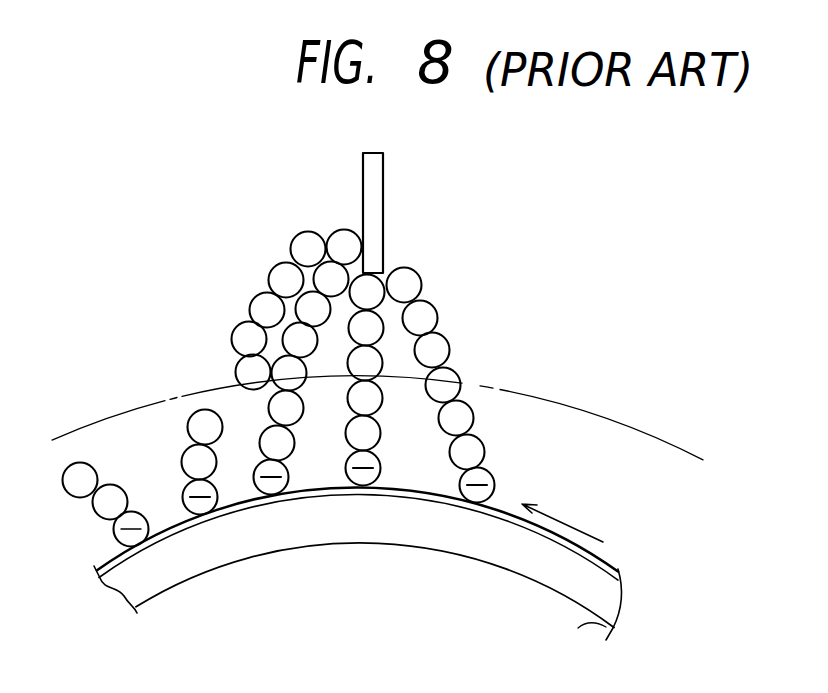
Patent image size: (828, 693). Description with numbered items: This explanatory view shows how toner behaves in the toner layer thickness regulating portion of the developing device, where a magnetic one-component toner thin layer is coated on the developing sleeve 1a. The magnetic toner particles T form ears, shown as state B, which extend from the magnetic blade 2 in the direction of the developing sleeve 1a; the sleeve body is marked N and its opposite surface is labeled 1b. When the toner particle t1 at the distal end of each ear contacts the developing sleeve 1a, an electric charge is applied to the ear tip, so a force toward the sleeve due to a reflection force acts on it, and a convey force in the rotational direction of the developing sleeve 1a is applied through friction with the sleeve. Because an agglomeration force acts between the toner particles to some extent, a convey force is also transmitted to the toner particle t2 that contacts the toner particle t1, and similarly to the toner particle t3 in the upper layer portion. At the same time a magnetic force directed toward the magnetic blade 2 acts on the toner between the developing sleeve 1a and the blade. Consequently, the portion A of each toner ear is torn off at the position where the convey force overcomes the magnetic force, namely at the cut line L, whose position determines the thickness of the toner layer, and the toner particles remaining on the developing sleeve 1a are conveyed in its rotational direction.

The magnetic blade 2 is at (377, 202).
The portion of the ear of toner A is at (223, 214).
The ear state of toner B is at (397, 373).
The magnetic toner particles T is at (451, 374).
The cut line L is at (93, 420).
The photosensitive drum body N is at (385, 564).
The developing sleeve 1a is at (609, 564).
The drum inner surface 1b is at (592, 628).
The toner particle at distal end of ear t1 is at (121, 532).
The toner particle contacting toner particle t1 t2 is at (99, 505).
The toner particle in upper layer portion t3 is at (72, 479).